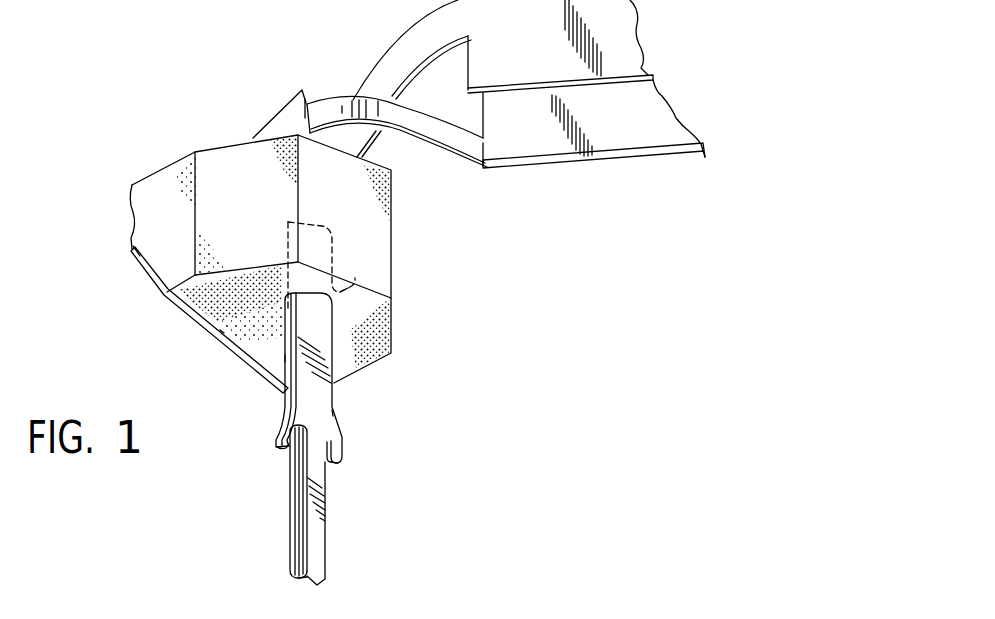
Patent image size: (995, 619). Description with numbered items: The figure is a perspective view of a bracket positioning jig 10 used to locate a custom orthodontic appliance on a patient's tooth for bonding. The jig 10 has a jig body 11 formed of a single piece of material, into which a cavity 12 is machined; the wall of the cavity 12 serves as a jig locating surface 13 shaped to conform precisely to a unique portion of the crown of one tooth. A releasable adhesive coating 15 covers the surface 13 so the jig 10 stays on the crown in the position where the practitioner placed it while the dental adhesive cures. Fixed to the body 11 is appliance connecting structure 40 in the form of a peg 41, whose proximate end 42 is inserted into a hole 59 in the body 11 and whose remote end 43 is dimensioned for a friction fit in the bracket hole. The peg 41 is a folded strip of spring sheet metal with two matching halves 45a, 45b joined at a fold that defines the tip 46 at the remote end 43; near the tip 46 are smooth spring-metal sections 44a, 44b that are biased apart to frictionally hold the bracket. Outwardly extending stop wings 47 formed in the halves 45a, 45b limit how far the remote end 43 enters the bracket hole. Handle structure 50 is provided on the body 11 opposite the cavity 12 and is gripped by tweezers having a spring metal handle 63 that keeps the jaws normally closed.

The bracket positioning jig 10 is at (175, 118).
The jig body 11 is at (400, 257).
The cavity 12 is at (195, 315).
The jig locating surface 13 is at (152, 273).
The releasable adhesive coating 15 is at (222, 330).
The appliance connecting structure 40 is at (243, 403).
The peg 41 is at (348, 396).
The proximate end 42 is at (333, 237).
The remote end 43 is at (318, 550).
The spring metal section 44a is at (288, 493).
The spring metal section 44b is at (318, 491).
The strip half 45a is at (287, 359).
The strip half 45b is at (337, 416).
The tip 46 is at (300, 582).
The stop wings 47 is at (282, 446).
The handle structure 50 is at (316, 92).
The hole 59 is at (352, 285).
The spring metal handle 63 is at (620, 160).